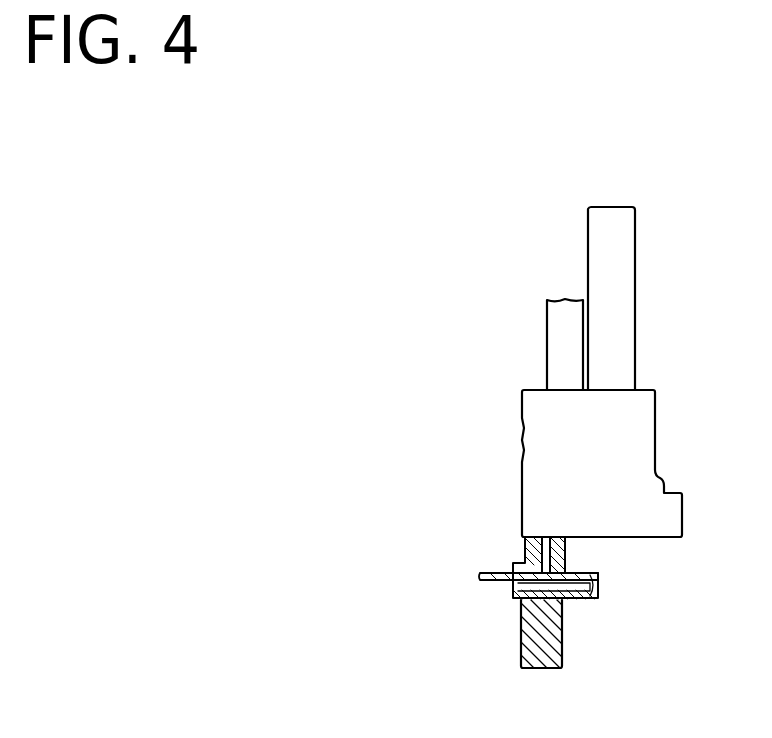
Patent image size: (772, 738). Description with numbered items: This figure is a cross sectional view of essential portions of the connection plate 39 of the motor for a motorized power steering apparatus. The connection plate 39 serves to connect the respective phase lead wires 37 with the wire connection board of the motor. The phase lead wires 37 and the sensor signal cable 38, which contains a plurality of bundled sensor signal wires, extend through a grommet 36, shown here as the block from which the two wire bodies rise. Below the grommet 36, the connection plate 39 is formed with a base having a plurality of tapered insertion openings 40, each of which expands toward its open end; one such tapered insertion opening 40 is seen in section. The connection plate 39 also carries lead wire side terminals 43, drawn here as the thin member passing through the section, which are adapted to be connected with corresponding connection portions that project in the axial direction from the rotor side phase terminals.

The grommet 36 is at (633, 413).
The phase lead wires 37 is at (562, 305).
The sensor signal cable 38 is at (627, 248).
The connection plate 39 is at (507, 610).
The tapered insertion openings 40 is at (602, 592).
The lead wire side terminals 43 is at (500, 575).